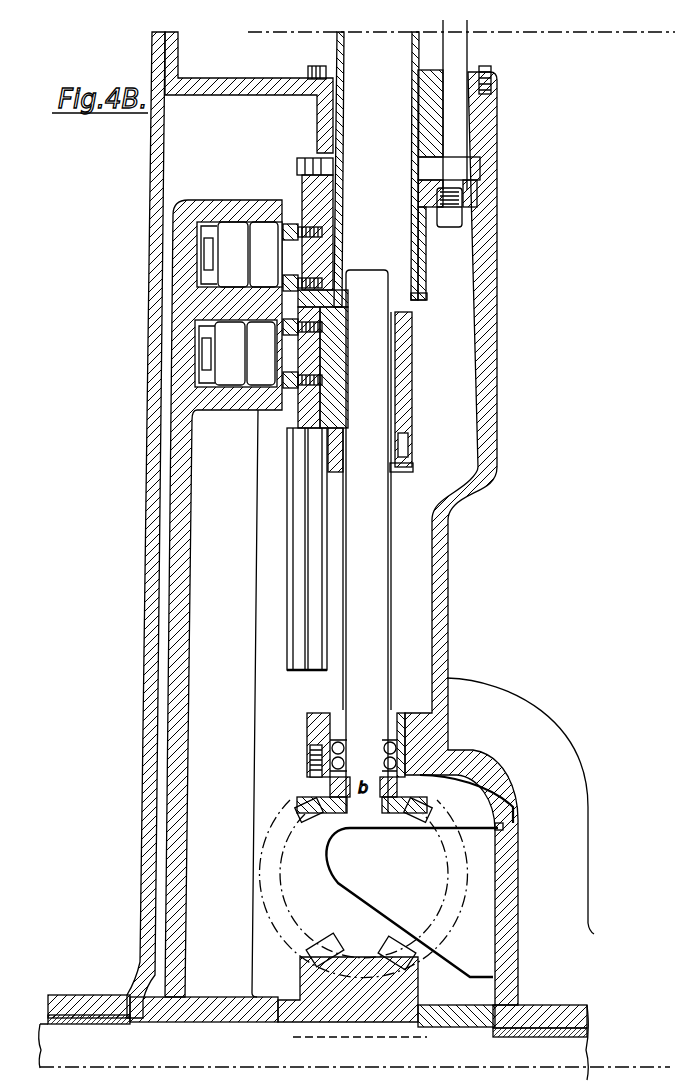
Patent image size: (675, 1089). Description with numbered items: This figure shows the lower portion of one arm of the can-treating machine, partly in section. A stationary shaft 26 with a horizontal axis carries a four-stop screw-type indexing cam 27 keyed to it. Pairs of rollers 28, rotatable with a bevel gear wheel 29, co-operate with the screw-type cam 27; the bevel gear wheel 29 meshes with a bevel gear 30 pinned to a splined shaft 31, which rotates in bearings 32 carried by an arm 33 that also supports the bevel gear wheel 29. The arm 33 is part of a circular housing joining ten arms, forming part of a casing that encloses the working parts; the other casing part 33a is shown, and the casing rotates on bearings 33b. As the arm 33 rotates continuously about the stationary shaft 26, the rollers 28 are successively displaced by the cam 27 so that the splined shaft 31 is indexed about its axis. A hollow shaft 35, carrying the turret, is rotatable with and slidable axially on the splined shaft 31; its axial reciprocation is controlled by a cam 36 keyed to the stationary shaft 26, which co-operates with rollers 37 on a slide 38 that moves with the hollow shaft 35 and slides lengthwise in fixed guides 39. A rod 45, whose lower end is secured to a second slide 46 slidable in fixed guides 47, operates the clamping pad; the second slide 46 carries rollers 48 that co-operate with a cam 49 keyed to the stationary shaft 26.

The stationary shaft 26 is at (130, 1037).
The screw-type indexing cam 27 is at (390, 995).
The rollers 28 is at (392, 952).
The bevel gear wheel 29 is at (463, 880).
The bevel gear 30 is at (432, 808).
The splined shaft 31 is at (372, 640).
The bearings 32 is at (397, 748).
The arm 33 is at (438, 580).
The casing part 33a is at (147, 570).
The bearings 33b is at (75, 1000).
The hollow shaft 35 is at (338, 52).
The cam 36 is at (203, 377).
The rollers 37 is at (267, 358).
The slide 38 is at (313, 355).
The fixed guides 39 is at (303, 487).
The rod 45 is at (458, 53).
The second slide 46 is at (315, 208).
The fixed guides 47 is at (303, 167).
The rollers 48 is at (270, 237).
The cam 49 is at (202, 277).